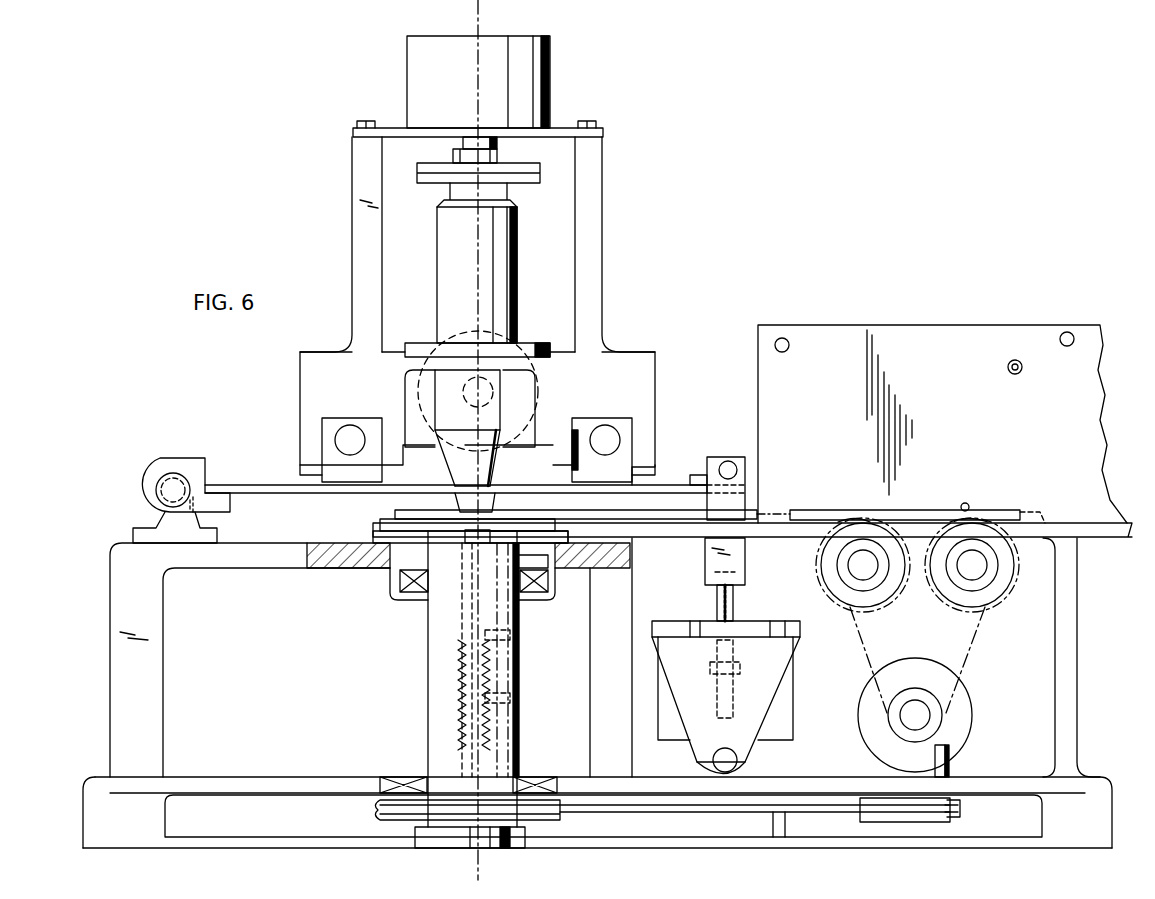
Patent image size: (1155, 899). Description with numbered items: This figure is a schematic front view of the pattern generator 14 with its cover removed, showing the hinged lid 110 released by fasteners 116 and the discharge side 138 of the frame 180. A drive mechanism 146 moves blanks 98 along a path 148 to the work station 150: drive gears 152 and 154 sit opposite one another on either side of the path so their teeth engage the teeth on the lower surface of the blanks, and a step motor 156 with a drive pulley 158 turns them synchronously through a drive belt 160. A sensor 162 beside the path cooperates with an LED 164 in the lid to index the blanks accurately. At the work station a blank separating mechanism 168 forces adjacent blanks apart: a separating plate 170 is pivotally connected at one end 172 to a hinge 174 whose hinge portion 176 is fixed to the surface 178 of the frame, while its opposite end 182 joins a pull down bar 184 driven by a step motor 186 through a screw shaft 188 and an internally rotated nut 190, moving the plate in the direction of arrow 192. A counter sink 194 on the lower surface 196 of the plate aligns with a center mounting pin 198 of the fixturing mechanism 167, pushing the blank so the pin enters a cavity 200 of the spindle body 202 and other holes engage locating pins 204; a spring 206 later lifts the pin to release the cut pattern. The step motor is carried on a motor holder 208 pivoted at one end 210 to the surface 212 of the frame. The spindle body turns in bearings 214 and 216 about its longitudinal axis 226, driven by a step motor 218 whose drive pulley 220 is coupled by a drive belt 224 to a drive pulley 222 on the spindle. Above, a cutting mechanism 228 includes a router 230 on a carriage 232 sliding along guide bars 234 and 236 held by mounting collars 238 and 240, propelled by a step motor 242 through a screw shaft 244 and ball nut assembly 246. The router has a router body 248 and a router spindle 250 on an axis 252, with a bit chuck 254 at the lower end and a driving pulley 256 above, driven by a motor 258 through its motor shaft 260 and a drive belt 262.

The pattern generator 14 is at (857, 243).
The blank 98 is at (552, 497).
The hinged lid 110 is at (900, 332).
The fasteners 116 is at (783, 338).
The discharge side 138 is at (106, 580).
The drive mechanism 146 is at (814, 601).
The path 148 is at (965, 493).
The work station 150 is at (400, 534).
The drive gears 152 is at (1001, 592).
The drive gears 154 is at (887, 592).
The step motor 156 is at (950, 700).
The drive pulley 158 is at (905, 745).
The drive belt 160 is at (961, 622).
The sensor 162 is at (1006, 516).
The LED 164 is at (1008, 368).
The fixturing mechanism 167 is at (418, 606).
The blank separating mechanism 168 is at (703, 380).
The separating plate 170 is at (240, 485).
The one end 172 is at (205, 480).
The hinge 174 is at (158, 465).
The hinge portion 176 is at (140, 526).
The surface 178 is at (118, 543).
The frame 180 is at (165, 563).
The opposite end 182 is at (683, 478).
The pull down bar 184 is at (728, 457).
The step motor 186 is at (786, 690).
The screw shaft 188 is at (734, 610).
The nut 190 is at (729, 684).
The arrow 192 is at (737, 437).
The counter sink 194 is at (483, 496).
The lower surface 196 is at (380, 497).
The center mounting pin 198 is at (470, 534).
The cavity 200 is at (508, 643).
The spindle body 202 is at (510, 680).
The locating pins 204 is at (505, 533).
The spring 206 is at (510, 712).
The motor holder 208 is at (792, 640).
The one end 210 is at (746, 753).
The surface 212 is at (795, 779).
The bearing 214 is at (528, 778).
The bearing 216 is at (522, 597).
The step motor 218 is at (950, 778).
The drive pulley 220 is at (940, 818).
The drive pulley 222 is at (378, 814).
The drive belt 224 is at (672, 812).
The longitudinal axis 226 is at (478, 860).
The cutting mechanism 228 is at (624, 302).
The router 230 is at (548, 276).
The carriage 232 is at (384, 278).
The guide bar 234 is at (351, 439).
The guide bar 236 is at (604, 439).
The mounting collar 238 is at (332, 428).
The mounting collar 240 is at (600, 424).
The step motor 242 is at (518, 342).
The screw shaft 244 is at (426, 364).
The ball nut assembly 246 is at (540, 388).
The router body 248 is at (517, 227).
The router spindle 250 is at (514, 183).
The axis 252 is at (478, 68).
The bit chuck 254 is at (460, 500).
The driving pulley 256 is at (452, 175).
The motor 258 is at (549, 55).
The motor shaft 260 is at (500, 152).
The drive belt 262 is at (440, 178).